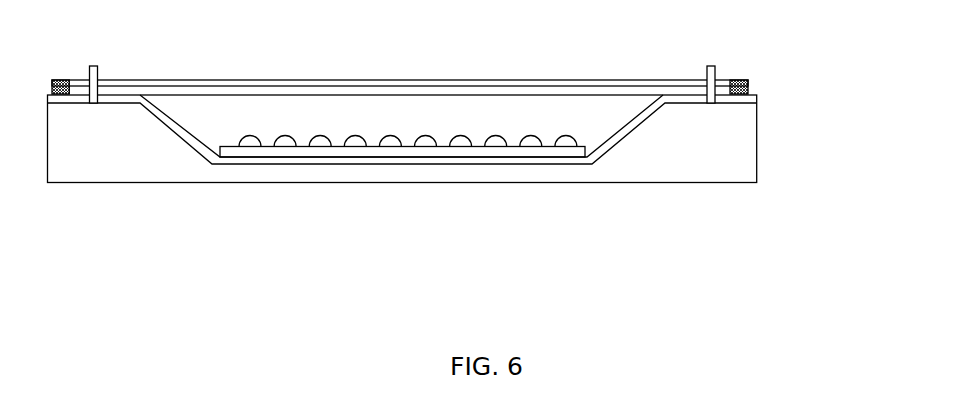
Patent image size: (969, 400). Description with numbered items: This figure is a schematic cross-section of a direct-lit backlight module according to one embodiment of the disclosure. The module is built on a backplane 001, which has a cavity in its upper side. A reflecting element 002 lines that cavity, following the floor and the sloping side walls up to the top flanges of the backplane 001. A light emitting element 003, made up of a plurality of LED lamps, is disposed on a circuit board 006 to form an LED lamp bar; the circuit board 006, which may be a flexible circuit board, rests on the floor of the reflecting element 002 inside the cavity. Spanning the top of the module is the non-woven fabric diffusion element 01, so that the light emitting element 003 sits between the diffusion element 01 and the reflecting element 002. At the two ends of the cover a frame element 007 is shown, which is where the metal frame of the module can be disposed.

The backplane 001 is at (625, 167).
The reflecting element 002 is at (628, 126).
The light emitting element 003 is at (356, 144).
The circuit board 006 is at (247, 152).
The non-woven fabric diffusion sheet 01 is at (603, 86).
The frame element 007 is at (747, 84).